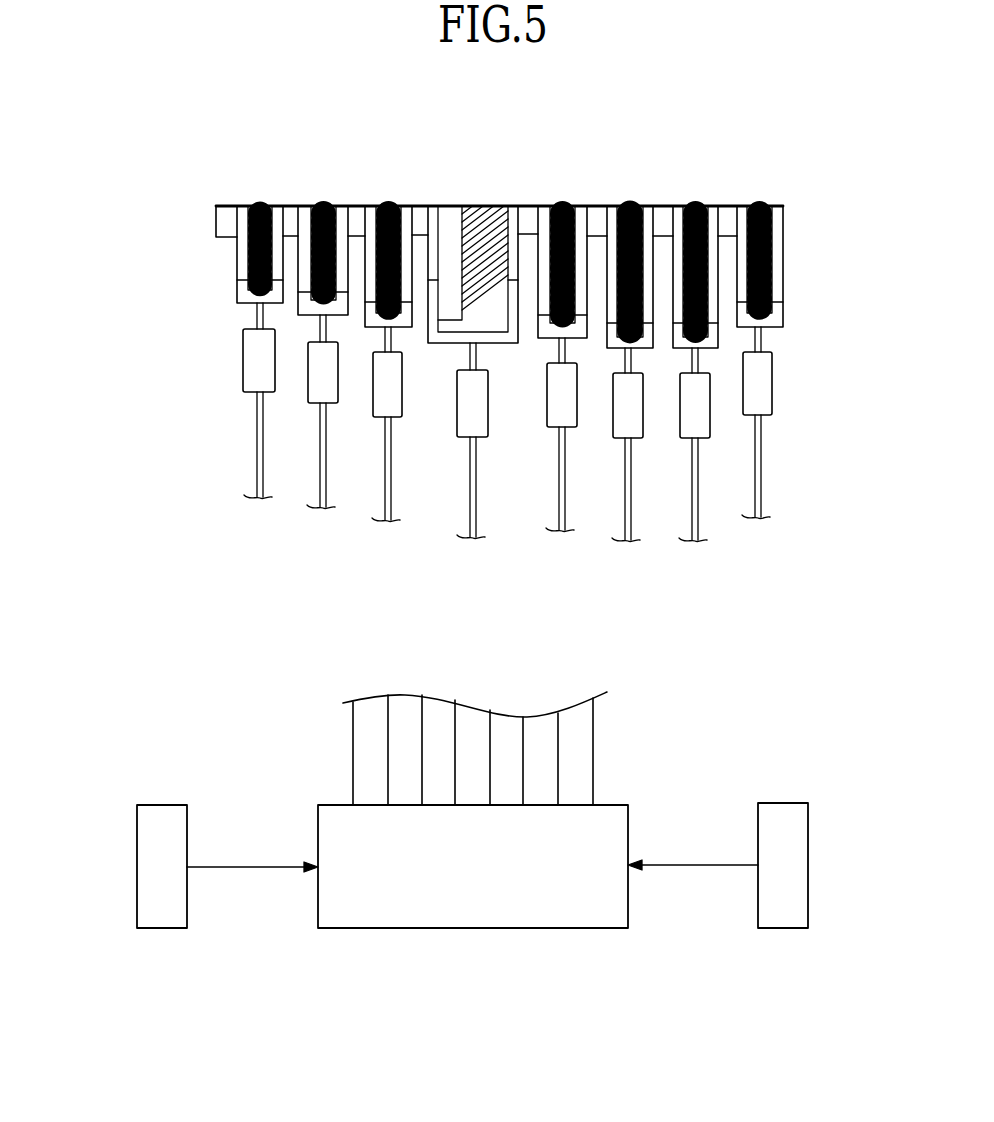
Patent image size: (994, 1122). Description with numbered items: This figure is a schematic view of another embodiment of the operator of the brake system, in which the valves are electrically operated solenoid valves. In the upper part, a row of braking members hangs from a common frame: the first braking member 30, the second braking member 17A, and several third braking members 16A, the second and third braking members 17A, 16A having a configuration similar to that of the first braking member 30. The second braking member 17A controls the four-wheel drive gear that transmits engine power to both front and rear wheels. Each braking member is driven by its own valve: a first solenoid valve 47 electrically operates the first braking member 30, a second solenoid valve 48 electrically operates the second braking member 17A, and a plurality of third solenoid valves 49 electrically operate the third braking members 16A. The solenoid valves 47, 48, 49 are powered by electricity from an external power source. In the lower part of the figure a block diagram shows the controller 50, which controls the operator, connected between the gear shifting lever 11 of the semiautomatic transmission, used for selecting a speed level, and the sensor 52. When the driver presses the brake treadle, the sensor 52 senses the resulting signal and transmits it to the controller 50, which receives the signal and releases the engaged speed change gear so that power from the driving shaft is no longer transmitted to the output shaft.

The third braking member 16A is at (237, 298).
The second braking member 17A is at (430, 338).
The first braking member 30 is at (777, 323).
The first solenoid valve 47 is at (765, 387).
The second solenoid valve 48 is at (488, 417).
The third solenoid valve 49 is at (245, 371).
The controller 50 is at (628, 815).
The gear shifting lever 11 is at (137, 849).
The sensor 52 is at (808, 862).